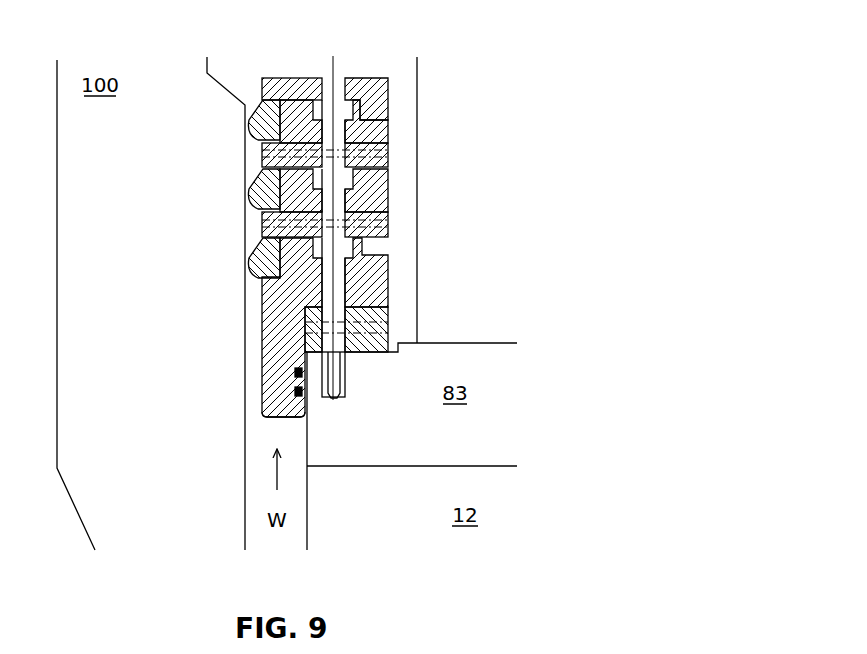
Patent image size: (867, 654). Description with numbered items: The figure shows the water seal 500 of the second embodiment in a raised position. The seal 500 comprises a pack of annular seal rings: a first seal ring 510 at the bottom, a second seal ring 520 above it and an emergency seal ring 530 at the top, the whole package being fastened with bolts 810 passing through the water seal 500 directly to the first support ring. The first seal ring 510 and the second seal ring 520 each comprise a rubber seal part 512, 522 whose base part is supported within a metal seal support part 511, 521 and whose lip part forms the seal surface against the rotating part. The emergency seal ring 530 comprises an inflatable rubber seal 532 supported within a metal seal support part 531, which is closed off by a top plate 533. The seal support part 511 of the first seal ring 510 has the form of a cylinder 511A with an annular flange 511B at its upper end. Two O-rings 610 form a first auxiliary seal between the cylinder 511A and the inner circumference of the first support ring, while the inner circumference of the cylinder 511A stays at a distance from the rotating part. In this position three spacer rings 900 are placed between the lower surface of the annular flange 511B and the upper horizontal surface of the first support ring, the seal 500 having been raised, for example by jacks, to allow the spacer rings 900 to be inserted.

The water seal 500 is at (443, 60).
The bolts 810 is at (333, 82).
The emergency seal ring 530 is at (394, 152).
The top plate 533 is at (389, 92).
The seal support part 531 is at (389, 128).
The inflatable rubber seal 532 is at (252, 125).
The second seal ring 520 is at (394, 222).
The seal support part 521 is at (389, 195).
The rubber seal part 522 is at (252, 195).
The first seal ring 510 is at (258, 305).
The rubber seal part 512 is at (252, 268).
The seal support part 511 is at (275, 345).
The annular flange 511B is at (389, 280).
The cylinder 511A is at (268, 410).
The O-rings 610 is at (293, 380).
The spacer rings 900 is at (372, 353).